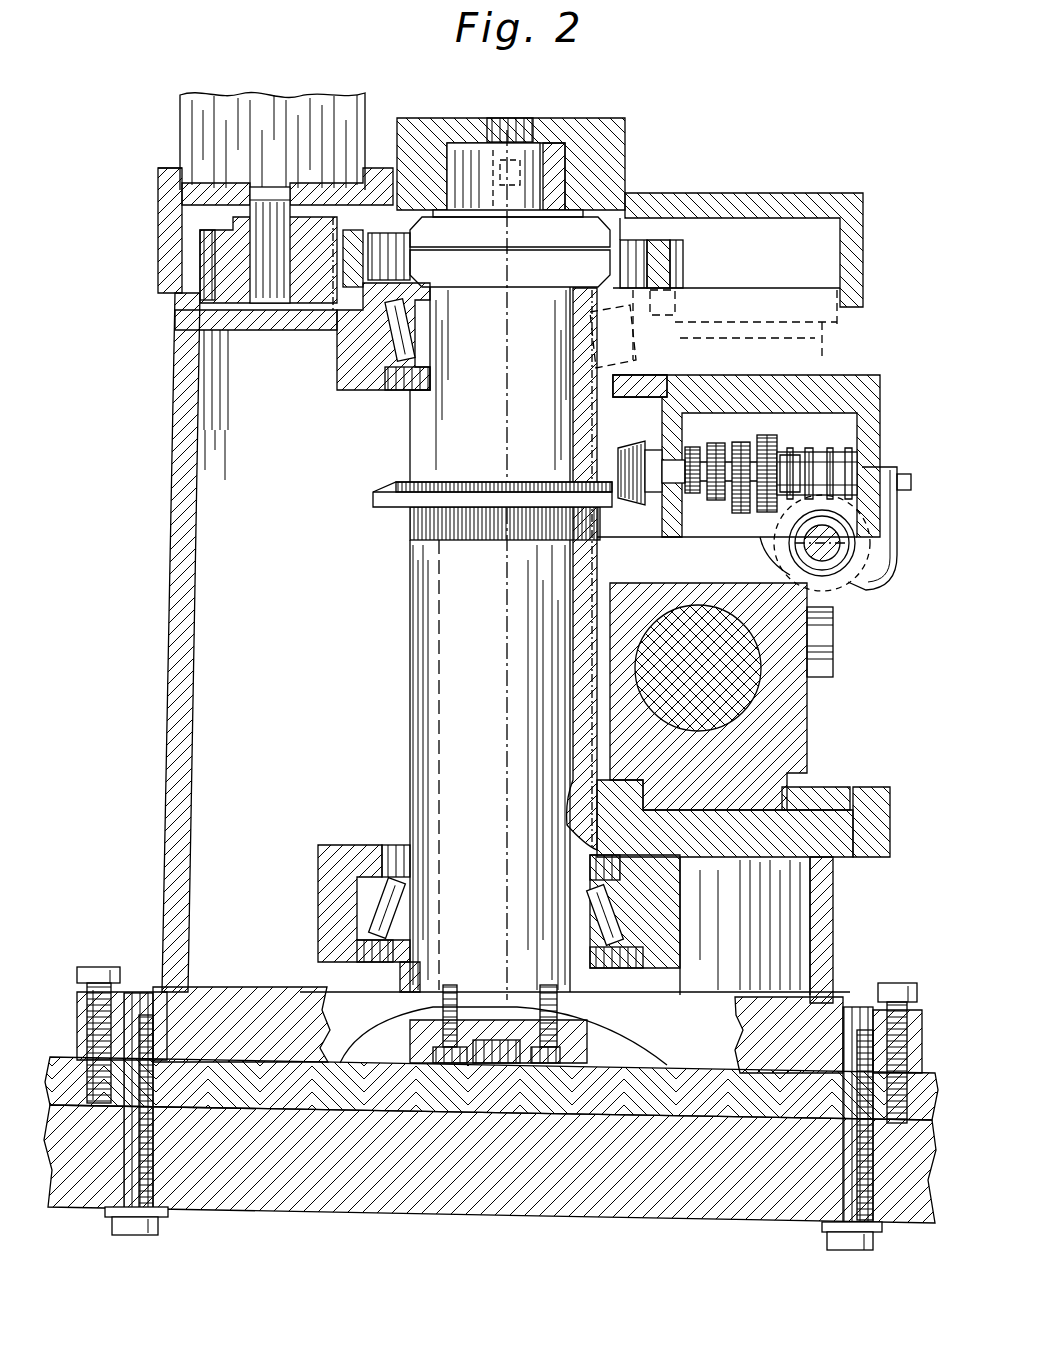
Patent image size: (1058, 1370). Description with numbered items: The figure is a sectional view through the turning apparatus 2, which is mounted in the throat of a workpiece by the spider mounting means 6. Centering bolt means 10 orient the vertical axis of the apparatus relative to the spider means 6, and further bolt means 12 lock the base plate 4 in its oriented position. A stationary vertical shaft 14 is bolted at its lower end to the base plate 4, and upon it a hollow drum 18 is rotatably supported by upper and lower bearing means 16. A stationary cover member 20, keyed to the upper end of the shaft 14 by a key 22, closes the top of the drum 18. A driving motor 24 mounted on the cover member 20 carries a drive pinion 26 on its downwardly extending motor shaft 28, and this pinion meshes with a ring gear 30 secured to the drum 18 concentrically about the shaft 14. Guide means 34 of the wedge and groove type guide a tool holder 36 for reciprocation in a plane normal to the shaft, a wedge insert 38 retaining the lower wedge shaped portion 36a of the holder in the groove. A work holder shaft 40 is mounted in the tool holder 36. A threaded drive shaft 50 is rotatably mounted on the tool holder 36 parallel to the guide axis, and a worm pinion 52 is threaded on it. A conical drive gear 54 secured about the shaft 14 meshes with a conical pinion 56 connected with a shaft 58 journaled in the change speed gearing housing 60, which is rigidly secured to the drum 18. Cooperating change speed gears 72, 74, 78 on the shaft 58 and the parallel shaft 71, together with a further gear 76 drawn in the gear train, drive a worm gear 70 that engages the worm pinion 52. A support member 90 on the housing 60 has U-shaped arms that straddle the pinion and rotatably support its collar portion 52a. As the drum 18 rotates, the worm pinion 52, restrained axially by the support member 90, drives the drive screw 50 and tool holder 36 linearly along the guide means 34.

The turning apparatus 2 is at (170, 530).
The base plate 4 is at (697, 994).
The spider mounting means 6 is at (514, 1212).
The centering bolt means 10 is at (100, 966).
The bolt means 12 is at (166, 1230).
The stationary vertical shaft 14 is at (430, 632).
The upper and lower bearing means 16 is at (398, 350).
The hollow drum 18 is at (190, 626).
The stationary cover member 20 is at (710, 196).
The key 22 is at (568, 172).
The driving motor 24 is at (312, 104).
The drive pinion 26 is at (238, 310).
The motor shaft 28 is at (268, 186).
The ring gear 30 is at (676, 270).
The guide means 34 is at (880, 797).
The tool holder 36 is at (808, 712).
The lower wedge shaped portion 36a is at (762, 804).
The wedge insert 38 is at (792, 787).
The work holder shaft 40 is at (718, 674).
The threaded drive shaft 50 is at (828, 560).
The worm pinion 52 is at (776, 548).
The collar portion 52a is at (802, 588).
The conical drive gear 54 is at (393, 490).
The conical pinion 56 is at (637, 450).
The shaft 58 is at (645, 500).
The change speed gearing housing 60 is at (880, 432).
The worm gear 70 is at (840, 450).
The shaft 71 is at (797, 455).
The change speed gear 72 is at (684, 514).
The change speed gear 74 is at (706, 438).
The gear 76 is at (735, 510).
The change speed gear 78 is at (766, 436).
The support member 90 is at (886, 540).